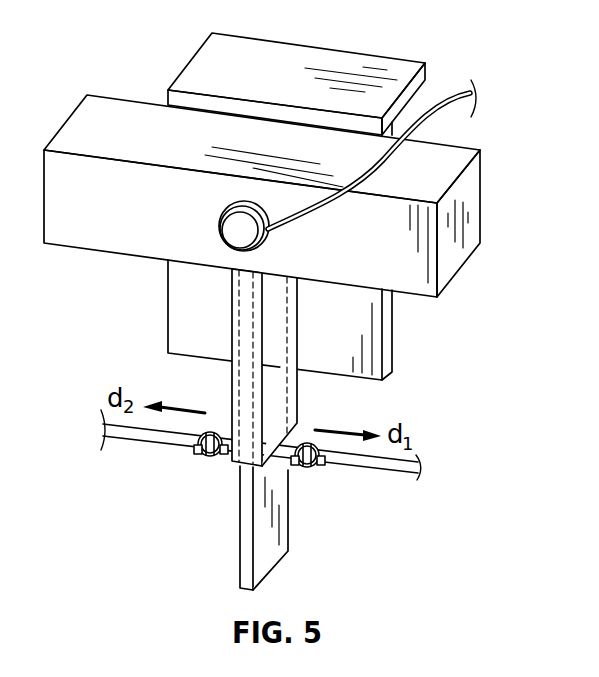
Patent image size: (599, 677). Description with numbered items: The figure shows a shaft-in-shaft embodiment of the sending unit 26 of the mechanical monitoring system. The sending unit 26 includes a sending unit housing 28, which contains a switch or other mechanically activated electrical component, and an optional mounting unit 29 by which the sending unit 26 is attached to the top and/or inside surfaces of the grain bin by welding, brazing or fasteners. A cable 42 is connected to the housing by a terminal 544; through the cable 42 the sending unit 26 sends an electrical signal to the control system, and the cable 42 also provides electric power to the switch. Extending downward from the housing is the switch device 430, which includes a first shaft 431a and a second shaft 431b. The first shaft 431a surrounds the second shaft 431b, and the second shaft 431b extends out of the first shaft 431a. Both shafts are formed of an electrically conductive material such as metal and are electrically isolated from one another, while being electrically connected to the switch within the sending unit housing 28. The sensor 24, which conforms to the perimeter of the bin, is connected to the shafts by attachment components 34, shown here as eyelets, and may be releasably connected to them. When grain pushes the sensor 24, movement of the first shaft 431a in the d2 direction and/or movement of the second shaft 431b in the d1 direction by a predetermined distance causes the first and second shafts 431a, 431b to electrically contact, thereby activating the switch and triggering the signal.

The sending unit 26 is at (145, 52).
The sending unit housing 28 is at (437, 297).
The mounting unit 29 is at (167, 310).
The cable 42 is at (445, 99).
The terminal 544 is at (240, 230).
The switch device 430 is at (264, 429).
The first shaft 431a is at (297, 385).
The second shaft 431b is at (245, 520).
The attachment components 34 is at (205, 460).
The sensor 24 is at (400, 477).